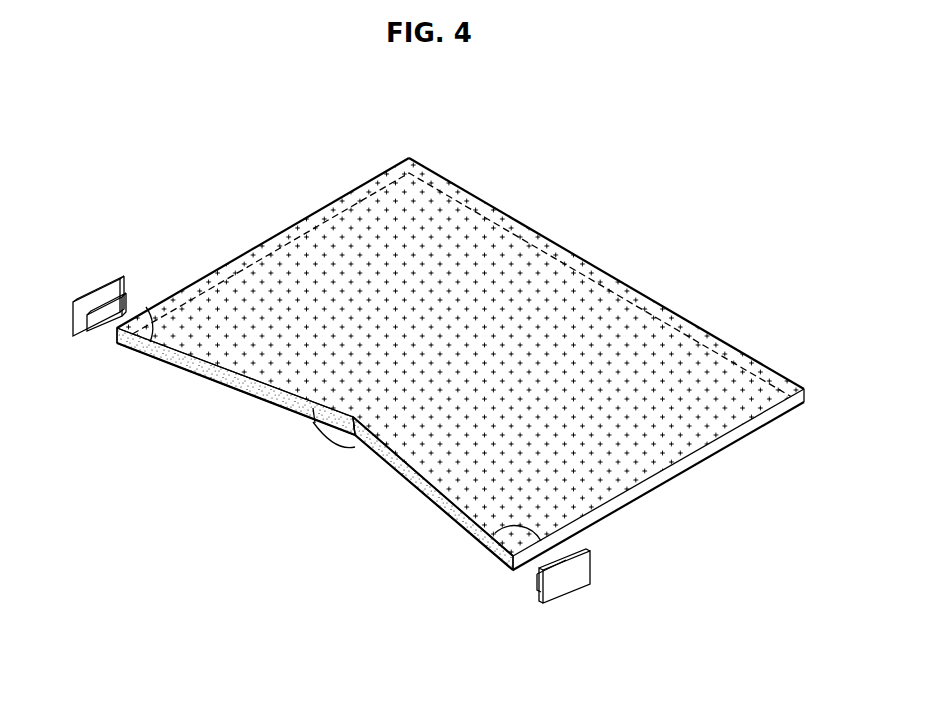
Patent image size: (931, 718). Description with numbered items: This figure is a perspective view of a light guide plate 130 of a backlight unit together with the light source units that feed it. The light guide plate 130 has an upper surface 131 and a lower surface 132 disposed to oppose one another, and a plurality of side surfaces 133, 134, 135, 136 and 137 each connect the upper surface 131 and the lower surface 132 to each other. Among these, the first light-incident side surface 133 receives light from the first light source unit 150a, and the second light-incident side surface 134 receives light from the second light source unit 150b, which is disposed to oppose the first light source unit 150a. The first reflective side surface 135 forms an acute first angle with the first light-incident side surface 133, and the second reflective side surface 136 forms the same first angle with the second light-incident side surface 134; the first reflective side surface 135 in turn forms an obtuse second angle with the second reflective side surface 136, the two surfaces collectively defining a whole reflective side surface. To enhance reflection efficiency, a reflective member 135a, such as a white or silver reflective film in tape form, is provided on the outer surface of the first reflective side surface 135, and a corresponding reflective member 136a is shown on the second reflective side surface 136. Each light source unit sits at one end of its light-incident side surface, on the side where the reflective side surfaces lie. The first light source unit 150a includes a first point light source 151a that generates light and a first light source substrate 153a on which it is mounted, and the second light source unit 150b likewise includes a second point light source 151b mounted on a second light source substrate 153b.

The light guide plate 130 is at (219, 153).
The upper surface 131 is at (565, 342).
The lower surface 132 is at (364, 452).
The first light-incident side surface 133 is at (247, 247).
The second light-incident side surface 134 is at (672, 481).
The first reflective side surface 135 is at (237, 387).
The reflective member 135a is at (152, 350).
The second reflective side surface 136 is at (428, 498).
The second inclined surface 136a is at (477, 546).
The side surface 137 is at (582, 255).
The first light source unit 150a is at (132, 250).
The first point light source 151a is at (122, 305).
The first light source substrate 153a is at (78, 312).
The second light source unit 150b is at (600, 655).
The second point light source 151b is at (545, 582).
The second light source substrate 153b is at (578, 583).